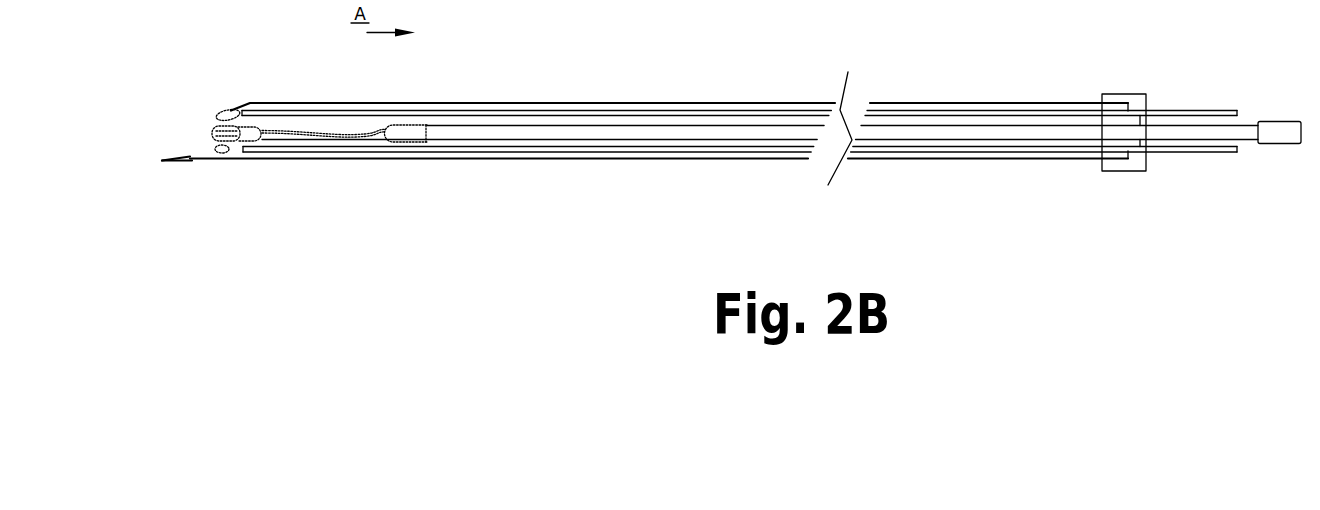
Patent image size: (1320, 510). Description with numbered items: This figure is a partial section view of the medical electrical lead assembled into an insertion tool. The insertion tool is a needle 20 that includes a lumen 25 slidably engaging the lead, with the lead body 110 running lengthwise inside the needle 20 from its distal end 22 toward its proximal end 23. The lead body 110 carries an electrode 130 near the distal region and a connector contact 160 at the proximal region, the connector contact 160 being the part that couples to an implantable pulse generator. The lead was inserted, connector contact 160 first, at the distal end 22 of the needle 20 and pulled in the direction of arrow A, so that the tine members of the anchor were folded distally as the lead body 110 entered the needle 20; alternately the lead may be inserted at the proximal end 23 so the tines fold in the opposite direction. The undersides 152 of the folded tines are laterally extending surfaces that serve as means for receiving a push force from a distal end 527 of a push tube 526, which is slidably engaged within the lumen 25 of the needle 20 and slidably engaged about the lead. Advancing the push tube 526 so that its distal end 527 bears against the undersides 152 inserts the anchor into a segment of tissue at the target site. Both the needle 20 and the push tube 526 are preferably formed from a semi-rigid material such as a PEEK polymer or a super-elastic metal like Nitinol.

The needle 20 is at (655, 102).
The distal end 22 is at (172, 110).
The proximal end 23 is at (1162, 94).
The lumen 25 is at (208, 150).
The lead body 110 is at (513, 133).
The electrode 130 is at (400, 131).
The undersides of tines 152 is at (238, 118).
The connector contact 160 is at (1277, 134).
The push tube 526 is at (297, 149).
The distal end of push tube 527 is at (238, 148).